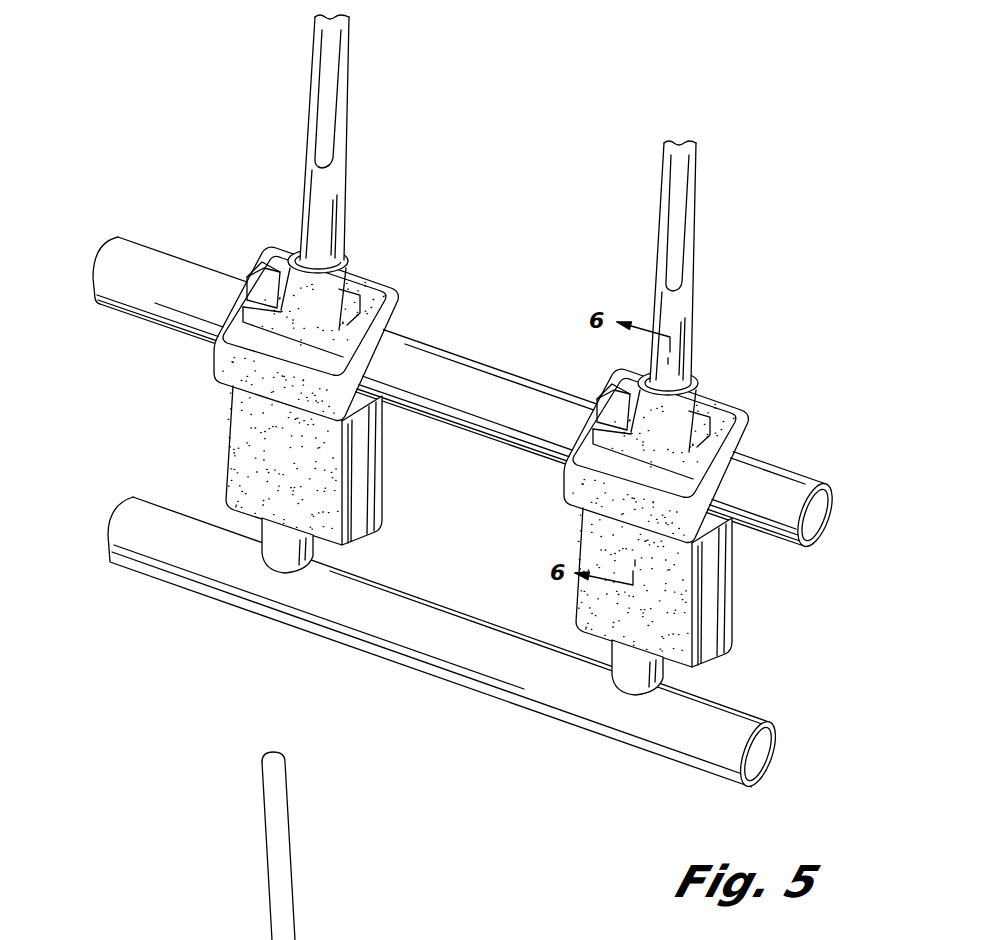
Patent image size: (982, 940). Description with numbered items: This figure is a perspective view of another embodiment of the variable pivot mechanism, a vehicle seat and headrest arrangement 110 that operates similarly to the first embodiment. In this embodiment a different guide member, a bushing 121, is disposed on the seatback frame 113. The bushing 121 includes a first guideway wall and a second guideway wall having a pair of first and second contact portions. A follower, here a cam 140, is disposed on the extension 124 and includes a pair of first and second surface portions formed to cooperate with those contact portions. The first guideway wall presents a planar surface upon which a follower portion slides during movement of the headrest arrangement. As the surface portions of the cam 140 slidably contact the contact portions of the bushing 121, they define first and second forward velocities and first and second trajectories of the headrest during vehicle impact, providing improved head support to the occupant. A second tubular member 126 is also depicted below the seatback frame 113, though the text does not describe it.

The vehicle seat and headrest arrangement 110 is at (220, 113).
The seatback frame 113 is at (743, 517).
The bushing 121 is at (377, 292).
The extension 124 is at (345, 210).
The second tube 126 is at (697, 727).
The cam 140 is at (347, 348).